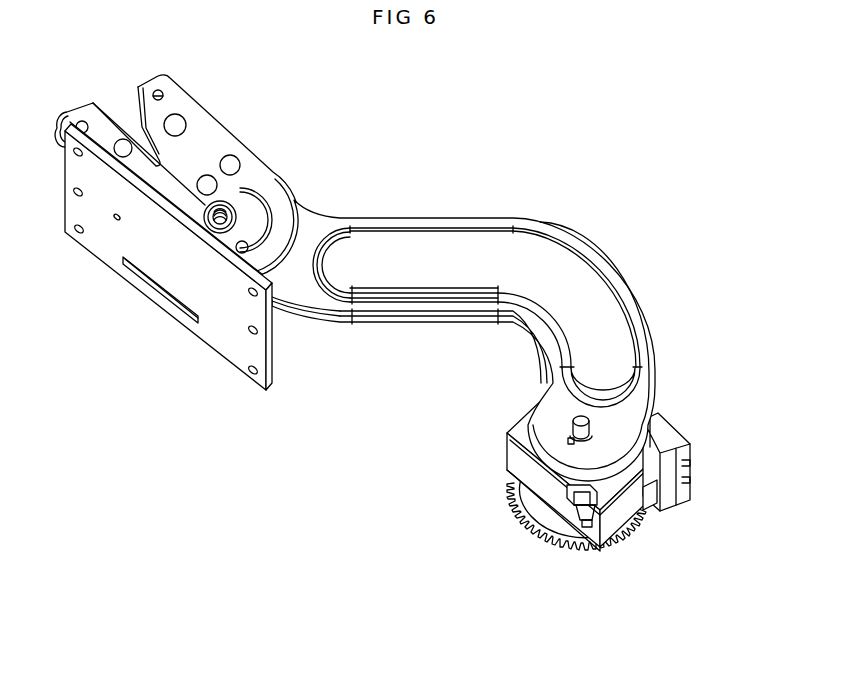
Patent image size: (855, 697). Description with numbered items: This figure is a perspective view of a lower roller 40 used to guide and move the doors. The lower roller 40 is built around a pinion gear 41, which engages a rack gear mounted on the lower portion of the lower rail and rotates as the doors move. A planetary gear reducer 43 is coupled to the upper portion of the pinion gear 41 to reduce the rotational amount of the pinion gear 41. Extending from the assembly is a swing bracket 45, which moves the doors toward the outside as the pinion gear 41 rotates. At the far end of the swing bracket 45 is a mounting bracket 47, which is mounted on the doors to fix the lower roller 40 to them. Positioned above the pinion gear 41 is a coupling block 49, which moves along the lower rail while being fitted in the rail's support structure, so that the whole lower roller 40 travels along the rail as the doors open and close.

The lower roller 40 is at (574, 162).
The pinion gear 41 is at (557, 524).
The planetary gear reducer 43 is at (557, 500).
The swing bracket 45 is at (626, 290).
The mounting bracket 47 is at (223, 343).
The coupling block 49 is at (689, 462).